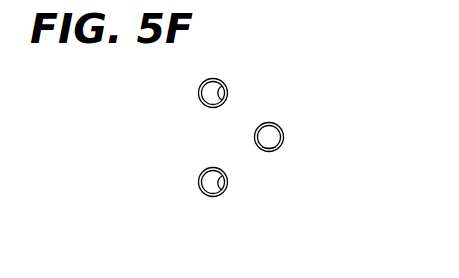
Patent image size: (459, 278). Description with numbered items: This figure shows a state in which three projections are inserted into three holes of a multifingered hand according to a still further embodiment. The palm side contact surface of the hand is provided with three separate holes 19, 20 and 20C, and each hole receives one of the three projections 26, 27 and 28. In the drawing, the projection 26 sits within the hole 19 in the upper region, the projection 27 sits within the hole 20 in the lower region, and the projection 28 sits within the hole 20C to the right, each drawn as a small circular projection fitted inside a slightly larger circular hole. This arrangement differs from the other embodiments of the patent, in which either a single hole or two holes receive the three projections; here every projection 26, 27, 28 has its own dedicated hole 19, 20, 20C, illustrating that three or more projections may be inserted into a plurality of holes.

The hole 19 is at (220, 84).
The hole 20 is at (220, 187).
The hole 20C is at (277, 148).
The projection 26 is at (212, 92).
The projection 27 is at (212, 182).
The projection 28 is at (268, 137).